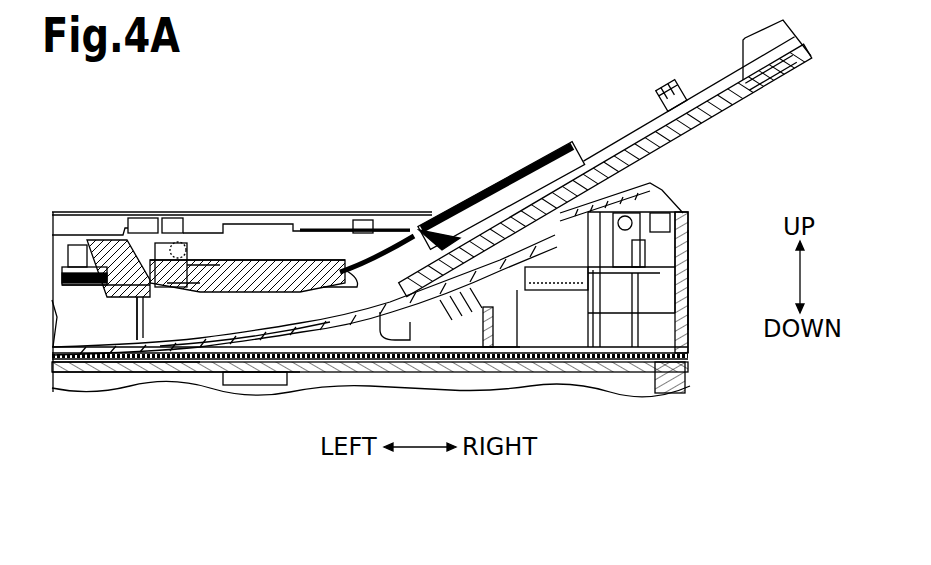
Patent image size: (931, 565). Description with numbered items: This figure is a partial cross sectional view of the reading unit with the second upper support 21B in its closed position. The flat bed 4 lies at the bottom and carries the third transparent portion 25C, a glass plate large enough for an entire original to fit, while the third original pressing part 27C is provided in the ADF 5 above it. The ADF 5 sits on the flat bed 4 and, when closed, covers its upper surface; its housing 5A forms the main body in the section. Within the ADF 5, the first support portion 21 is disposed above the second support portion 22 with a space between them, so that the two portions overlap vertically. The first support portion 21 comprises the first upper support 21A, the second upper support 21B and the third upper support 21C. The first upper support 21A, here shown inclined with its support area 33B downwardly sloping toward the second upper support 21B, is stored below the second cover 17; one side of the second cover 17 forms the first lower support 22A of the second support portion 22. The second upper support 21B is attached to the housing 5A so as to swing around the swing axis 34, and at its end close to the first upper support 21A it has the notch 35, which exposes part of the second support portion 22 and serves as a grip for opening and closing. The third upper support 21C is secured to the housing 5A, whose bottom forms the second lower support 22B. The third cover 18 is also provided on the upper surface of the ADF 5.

The flat bed 4 is at (688, 349).
The ADF 5 is at (688, 213).
The housing 5A is at (688, 265).
The second cover 17 is at (723, 123).
The third cover 18 is at (657, 178).
The first support portion 21 is at (278, 250).
The first upper support 21A is at (550, 146).
The second upper support 21B is at (245, 267).
The third upper support 21C is at (137, 236).
The second support portion 22 is at (313, 314).
The first lower support 22A is at (517, 217).
The second lower support 22B is at (203, 337).
The third transparent portion 25C is at (188, 373).
The third original pressing part 27C is at (115, 373).
The support area 33B is at (478, 195).
The swing axis 34 is at (170, 278).
The notch 35 is at (387, 211).